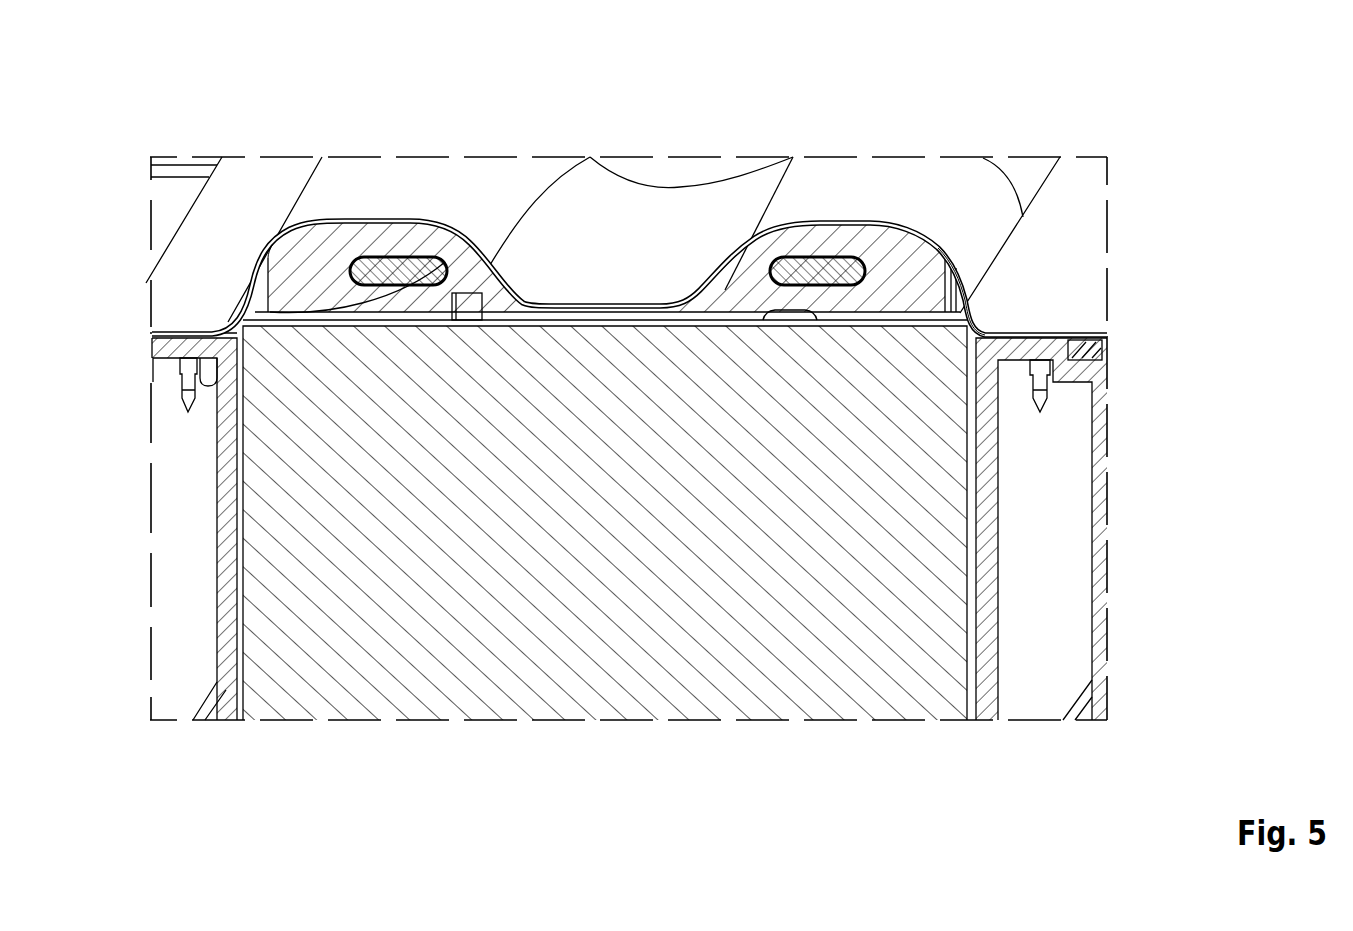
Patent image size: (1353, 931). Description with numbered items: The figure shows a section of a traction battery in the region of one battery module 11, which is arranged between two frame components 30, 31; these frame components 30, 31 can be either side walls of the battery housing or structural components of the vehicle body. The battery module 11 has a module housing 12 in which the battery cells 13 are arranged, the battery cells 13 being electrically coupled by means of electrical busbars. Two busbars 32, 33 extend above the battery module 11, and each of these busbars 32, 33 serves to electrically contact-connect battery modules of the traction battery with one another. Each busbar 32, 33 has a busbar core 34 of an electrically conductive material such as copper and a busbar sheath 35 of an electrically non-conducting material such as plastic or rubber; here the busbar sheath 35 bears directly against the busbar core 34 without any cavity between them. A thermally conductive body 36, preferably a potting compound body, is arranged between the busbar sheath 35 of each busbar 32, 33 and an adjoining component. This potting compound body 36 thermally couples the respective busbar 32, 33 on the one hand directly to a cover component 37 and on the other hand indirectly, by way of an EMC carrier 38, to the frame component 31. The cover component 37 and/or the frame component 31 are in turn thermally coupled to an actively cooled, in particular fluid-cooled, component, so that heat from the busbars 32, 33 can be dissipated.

The battery module 11 is at (1040, 148).
The module housing 12 is at (958, 313).
The battery cells 13 is at (604, 557).
The frame component 30 is at (217, 577).
The frame component 31 is at (1097, 543).
The busbar 32 is at (407, 258).
The busbar 33 is at (834, 252).
The busbar core 34 is at (370, 262).
The busbar sheath 35 is at (248, 312).
The thermally conductive body 36 is at (311, 268).
The cover component 37 is at (647, 257).
The EMC carrier 38 is at (717, 320).